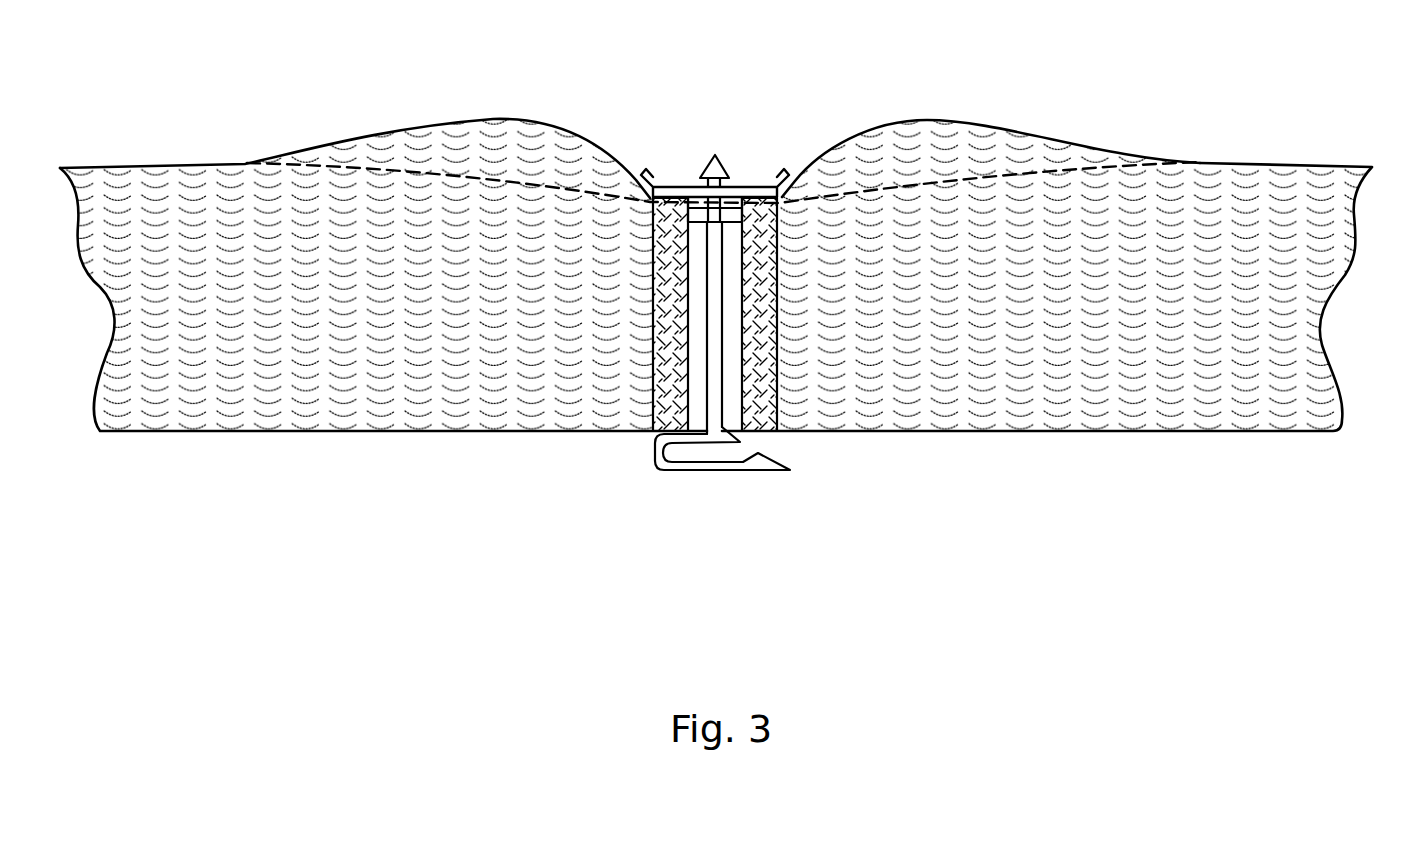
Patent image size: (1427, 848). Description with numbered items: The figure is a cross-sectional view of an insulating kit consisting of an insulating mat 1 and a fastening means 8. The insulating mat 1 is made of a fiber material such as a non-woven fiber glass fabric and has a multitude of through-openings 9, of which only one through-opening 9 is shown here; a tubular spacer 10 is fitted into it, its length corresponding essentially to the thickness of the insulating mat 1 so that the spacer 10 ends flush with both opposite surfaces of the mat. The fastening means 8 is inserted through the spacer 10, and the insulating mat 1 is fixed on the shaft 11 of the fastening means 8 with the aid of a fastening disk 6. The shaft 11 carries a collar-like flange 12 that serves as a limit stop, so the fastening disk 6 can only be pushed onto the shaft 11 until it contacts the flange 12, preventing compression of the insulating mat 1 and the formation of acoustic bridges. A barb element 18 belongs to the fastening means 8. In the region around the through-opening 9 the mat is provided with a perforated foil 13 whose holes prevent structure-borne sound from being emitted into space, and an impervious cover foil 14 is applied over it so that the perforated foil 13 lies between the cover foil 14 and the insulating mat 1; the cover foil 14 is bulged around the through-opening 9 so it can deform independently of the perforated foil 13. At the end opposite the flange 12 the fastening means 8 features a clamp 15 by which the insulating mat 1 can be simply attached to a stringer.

The insulating mat 1 is at (1348, 198).
The fastening disk 6 is at (643, 176).
The fastening means 8 is at (633, 471).
The through-opening 9 is at (660, 357).
The tubular spacer 10 is at (770, 362).
The shaft 11 is at (712, 353).
The flange 12 is at (696, 212).
The perforated foil 13 is at (1017, 172).
The cover foil 14 is at (926, 120).
The clamp 15 is at (773, 468).
The barb element 18 is at (720, 170).